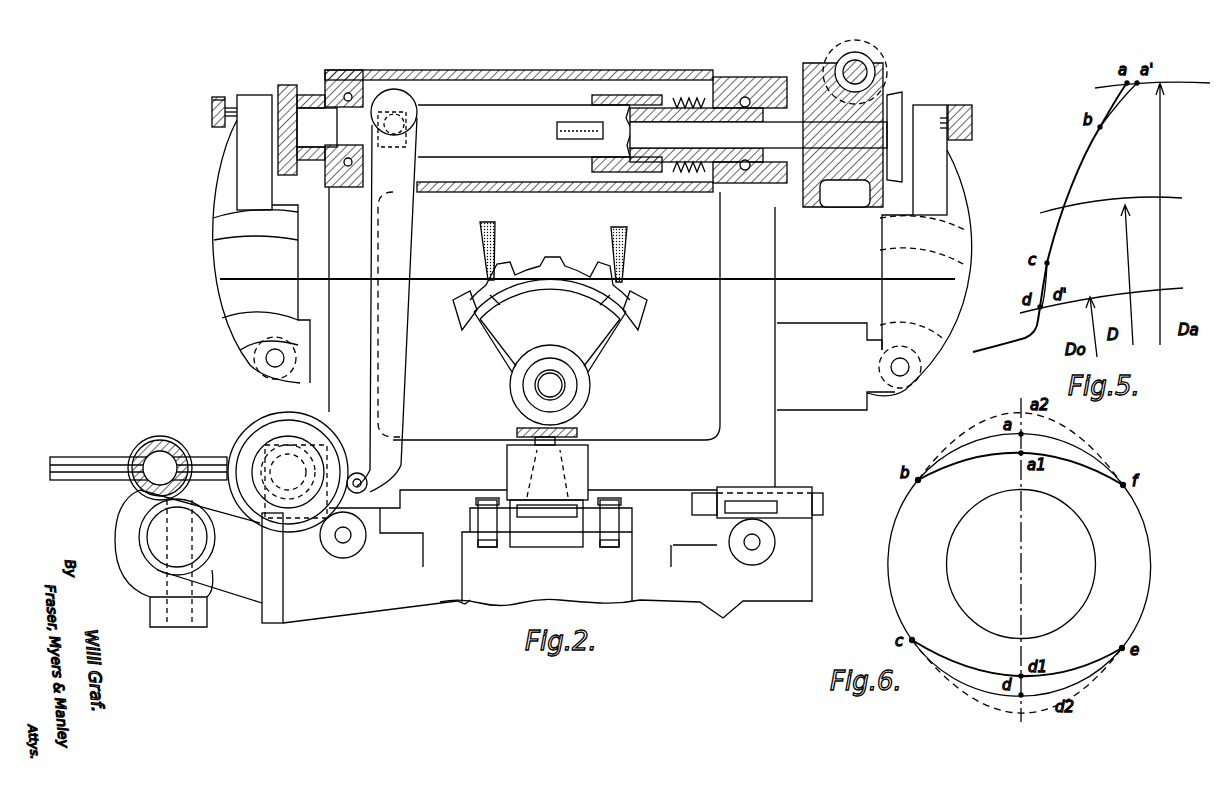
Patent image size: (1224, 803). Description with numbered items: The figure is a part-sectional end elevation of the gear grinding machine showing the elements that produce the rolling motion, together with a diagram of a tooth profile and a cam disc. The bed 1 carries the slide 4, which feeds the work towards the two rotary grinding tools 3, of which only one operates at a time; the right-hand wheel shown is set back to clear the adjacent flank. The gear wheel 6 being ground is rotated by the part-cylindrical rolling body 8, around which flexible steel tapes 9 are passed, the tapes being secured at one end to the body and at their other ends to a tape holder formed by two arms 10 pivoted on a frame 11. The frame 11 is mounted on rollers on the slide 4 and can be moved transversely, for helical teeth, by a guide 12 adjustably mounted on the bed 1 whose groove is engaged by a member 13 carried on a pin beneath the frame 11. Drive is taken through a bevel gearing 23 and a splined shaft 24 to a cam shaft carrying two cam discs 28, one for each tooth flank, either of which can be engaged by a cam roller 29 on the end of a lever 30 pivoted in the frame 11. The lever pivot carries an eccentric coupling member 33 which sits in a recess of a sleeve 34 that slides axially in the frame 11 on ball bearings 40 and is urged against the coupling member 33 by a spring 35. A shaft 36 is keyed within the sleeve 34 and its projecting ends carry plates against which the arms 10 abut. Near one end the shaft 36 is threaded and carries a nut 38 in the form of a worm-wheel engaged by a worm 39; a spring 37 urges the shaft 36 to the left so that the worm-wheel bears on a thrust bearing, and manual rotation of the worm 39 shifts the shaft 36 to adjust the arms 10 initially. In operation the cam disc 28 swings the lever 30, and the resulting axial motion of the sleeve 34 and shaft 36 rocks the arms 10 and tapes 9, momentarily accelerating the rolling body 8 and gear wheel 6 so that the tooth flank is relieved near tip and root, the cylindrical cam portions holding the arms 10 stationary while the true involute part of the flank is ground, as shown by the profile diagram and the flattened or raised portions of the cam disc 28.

In FIG. 2, the bed 1 is at (620, 570).
In FIG. 2, the rotary grinding tools 3 is at (497, 243).
In FIG. 2, the slide 4 is at (814, 548).
In FIG. 2, the gear wheel 6 is at (563, 264).
In FIG. 2, the rolling body 8 is at (613, 350).
In FIG. 2, the flexible steel tapes 9 is at (440, 279).
In FIG. 2, the arms 10 is at (210, 237).
In FIG. 2, the frame 11 is at (720, 362).
In FIG. 2, the guide 12 is at (526, 543).
In FIG. 2, the member 13 is at (553, 510).
In FIG. 2, the bevel gearing 23 is at (136, 445).
In FIG. 2, the splined shaft 24 is at (78, 457).
In FIG. 2, the cam discs 28 is at (238, 447).
In FIG. 6, the cam discs 28 is at (905, 606).
In FIG. 2, the cam roller 29 is at (368, 481).
In FIG. 2, the lever 30 is at (403, 350).
In FIG. 2, the coupling member 33 is at (418, 128).
In FIG. 2, the sleeve 34 is at (525, 131).
In FIG. 2, the spring 35 is at (648, 128).
In FIG. 2, the shaft 36 is at (758, 135).
In FIG. 2, the spring 37 is at (307, 130).
In FIG. 2, the nut 38 is at (893, 105).
In FIG. 2, the worm 39 is at (835, 70).
In FIG. 2, the ball bearings 40 is at (347, 95).